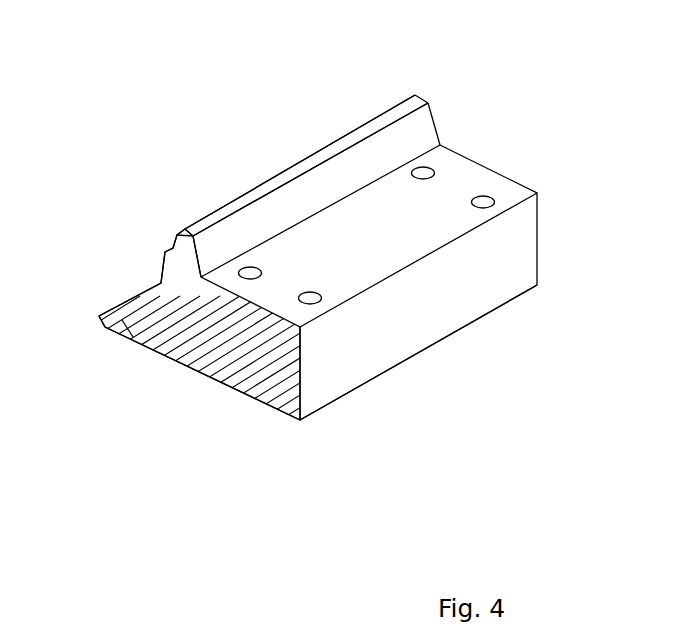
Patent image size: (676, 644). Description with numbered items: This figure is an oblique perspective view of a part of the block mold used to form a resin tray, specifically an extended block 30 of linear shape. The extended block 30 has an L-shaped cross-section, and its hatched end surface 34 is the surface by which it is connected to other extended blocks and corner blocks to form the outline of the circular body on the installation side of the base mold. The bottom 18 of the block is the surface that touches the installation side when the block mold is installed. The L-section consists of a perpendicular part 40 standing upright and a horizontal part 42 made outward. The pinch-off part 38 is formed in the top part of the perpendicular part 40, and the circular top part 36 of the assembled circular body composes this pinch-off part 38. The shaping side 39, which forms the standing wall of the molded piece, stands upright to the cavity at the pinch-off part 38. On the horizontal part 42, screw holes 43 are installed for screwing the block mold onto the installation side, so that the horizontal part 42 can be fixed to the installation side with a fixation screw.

The bottom 18 is at (200, 368).
The extended block 30 is at (498, 258).
The end surface 34 is at (520, 187).
The circular top part 36 is at (432, 102).
The pinch-off part 38 is at (290, 167).
The shaping side 39 is at (160, 282).
The perpendicular part 40 is at (184, 228).
The horizontal part 42 is at (285, 340).
The screw hole 43 is at (428, 166).